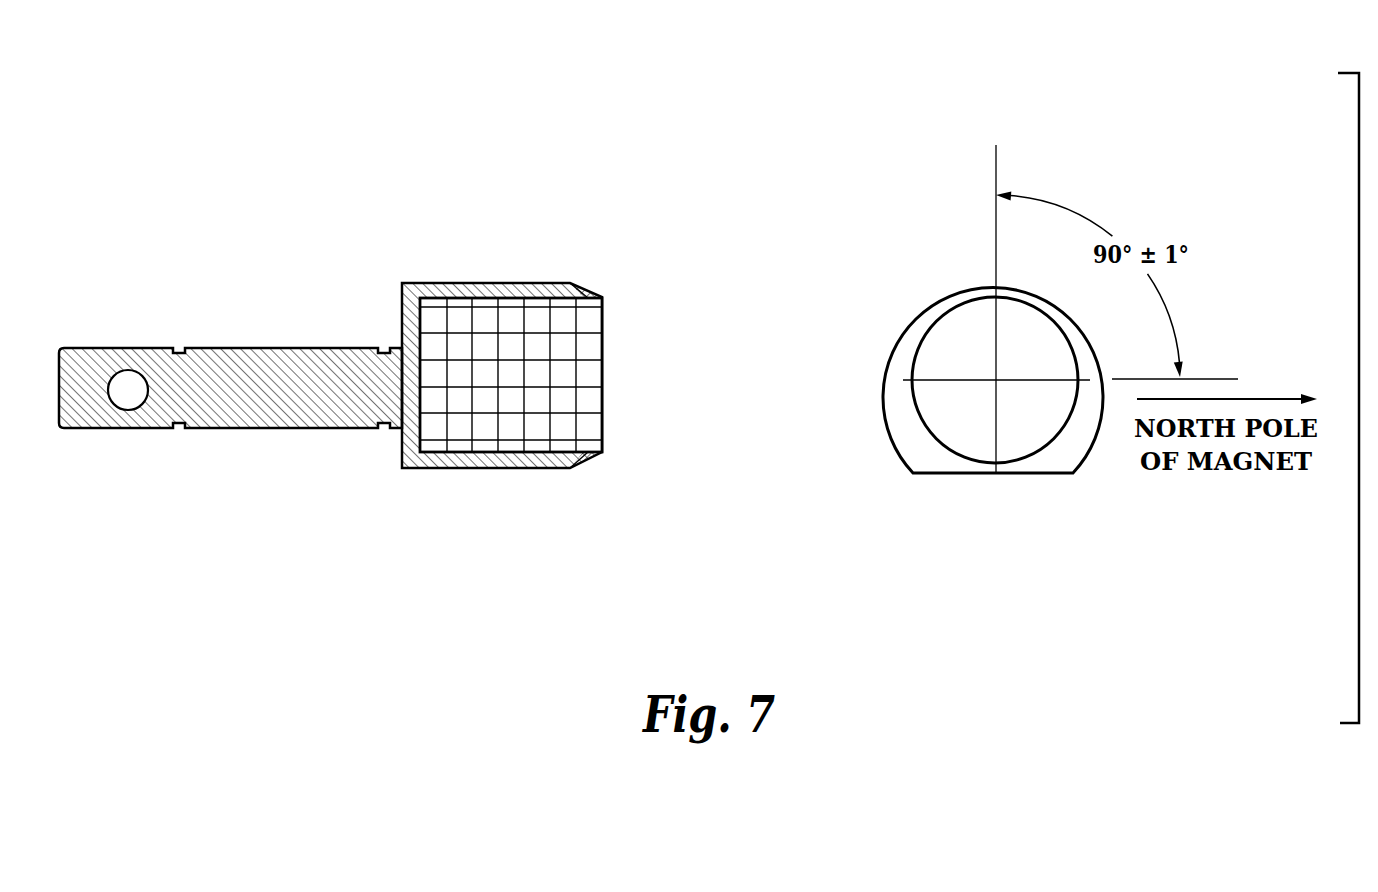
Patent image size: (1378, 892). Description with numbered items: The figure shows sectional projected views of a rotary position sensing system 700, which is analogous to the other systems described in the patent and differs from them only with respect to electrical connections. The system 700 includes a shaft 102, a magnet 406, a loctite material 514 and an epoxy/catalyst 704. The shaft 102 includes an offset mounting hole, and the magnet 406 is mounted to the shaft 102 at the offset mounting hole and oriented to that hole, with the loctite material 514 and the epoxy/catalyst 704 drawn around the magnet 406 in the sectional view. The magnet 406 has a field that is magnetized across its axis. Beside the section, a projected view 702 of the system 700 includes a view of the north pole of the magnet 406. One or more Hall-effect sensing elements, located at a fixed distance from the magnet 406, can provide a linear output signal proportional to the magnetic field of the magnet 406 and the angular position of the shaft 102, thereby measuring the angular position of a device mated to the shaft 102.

The rotary position sensing system 700 is at (224, 114).
The shaft 102 is at (236, 335).
The loctite material 514 is at (485, 275).
The magnet 406 is at (1040, 510).
The epoxy/catalyst 704 is at (588, 479).
The projected view 702 is at (918, 257).